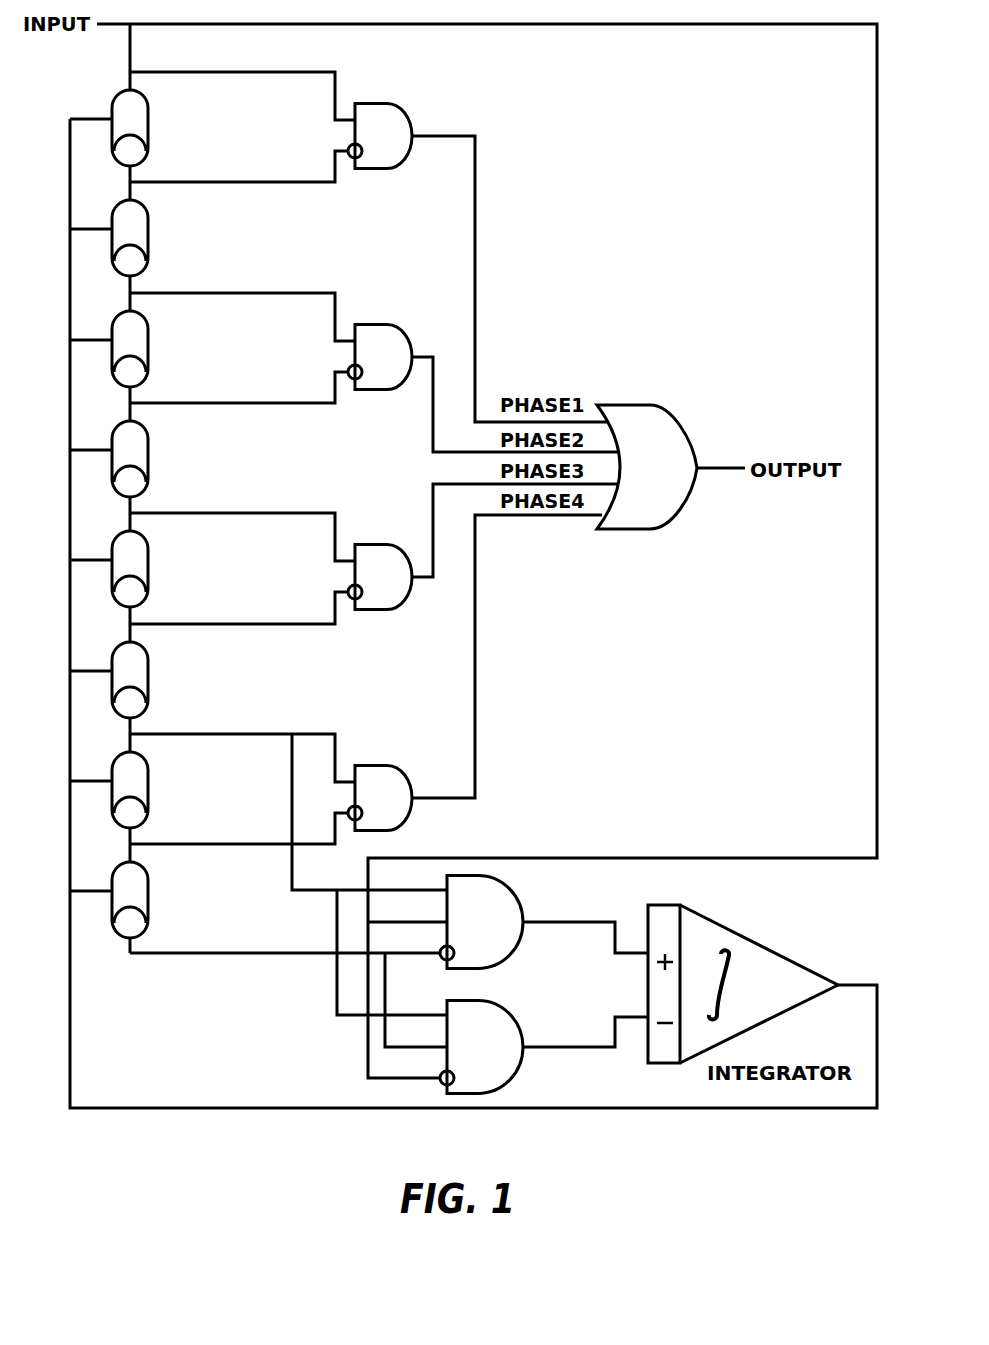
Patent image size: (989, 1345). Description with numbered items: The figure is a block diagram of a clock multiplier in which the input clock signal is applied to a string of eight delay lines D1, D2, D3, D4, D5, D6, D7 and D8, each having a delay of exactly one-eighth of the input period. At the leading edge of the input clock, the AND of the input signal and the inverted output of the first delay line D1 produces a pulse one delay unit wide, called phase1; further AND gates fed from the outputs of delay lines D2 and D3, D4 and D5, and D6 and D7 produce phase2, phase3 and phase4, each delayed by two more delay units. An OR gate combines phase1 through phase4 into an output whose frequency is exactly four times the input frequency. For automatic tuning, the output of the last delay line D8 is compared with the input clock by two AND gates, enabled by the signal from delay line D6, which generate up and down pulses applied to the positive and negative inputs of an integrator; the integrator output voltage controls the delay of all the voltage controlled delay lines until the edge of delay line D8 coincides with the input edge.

The first delay line D1 is at (148, 127).
The second delay line D2 is at (148, 237).
The third delay line D3 is at (148, 348).
The fourth delay line D4 is at (148, 458).
The fifth delay line D5 is at (148, 568).
The sixth delay line D6 is at (148, 679).
The seventh delay line D7 is at (148, 789).
The eighth delay line D8 is at (148, 899).